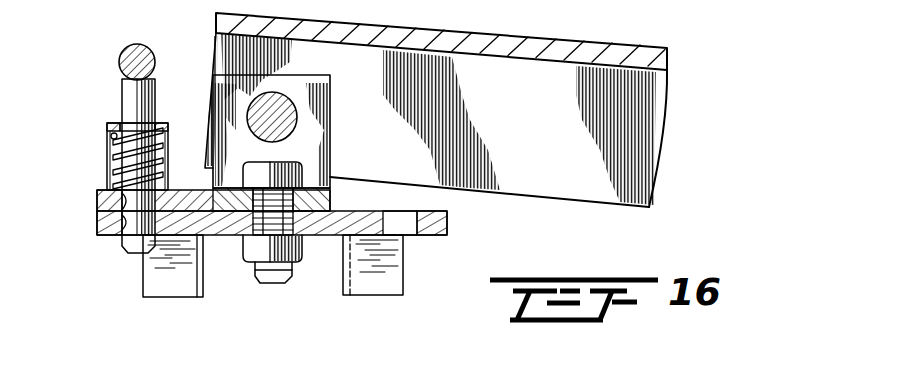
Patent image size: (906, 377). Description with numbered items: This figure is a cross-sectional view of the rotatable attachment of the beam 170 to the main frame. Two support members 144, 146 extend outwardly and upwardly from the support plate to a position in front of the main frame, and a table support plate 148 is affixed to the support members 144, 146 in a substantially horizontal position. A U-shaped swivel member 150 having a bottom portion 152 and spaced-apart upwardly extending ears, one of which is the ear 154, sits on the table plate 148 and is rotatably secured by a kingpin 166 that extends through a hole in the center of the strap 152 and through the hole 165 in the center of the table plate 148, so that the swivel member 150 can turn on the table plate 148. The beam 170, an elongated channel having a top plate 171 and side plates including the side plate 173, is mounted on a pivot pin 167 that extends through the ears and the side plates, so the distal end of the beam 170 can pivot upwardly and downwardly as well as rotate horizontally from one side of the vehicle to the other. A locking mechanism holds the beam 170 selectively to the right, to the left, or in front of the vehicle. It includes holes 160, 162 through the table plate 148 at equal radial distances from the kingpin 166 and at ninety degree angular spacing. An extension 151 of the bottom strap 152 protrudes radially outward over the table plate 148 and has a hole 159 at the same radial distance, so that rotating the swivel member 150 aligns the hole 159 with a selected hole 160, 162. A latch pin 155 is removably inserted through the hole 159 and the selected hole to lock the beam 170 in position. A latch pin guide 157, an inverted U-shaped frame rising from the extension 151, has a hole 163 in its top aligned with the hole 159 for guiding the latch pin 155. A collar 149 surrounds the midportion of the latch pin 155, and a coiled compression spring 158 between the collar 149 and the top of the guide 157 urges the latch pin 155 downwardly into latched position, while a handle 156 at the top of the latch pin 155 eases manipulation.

The support member 144 is at (143, 281).
The support member 146 is at (404, 288).
The table support plate 148 is at (346, 210).
The collar 149 is at (115, 188).
The swivel member 150 is at (338, 162).
The extension 151 is at (100, 189).
The bottom portion 152 is at (310, 186).
The ear 154 is at (212, 92).
The latch pin 155 is at (122, 82).
The handle 156 is at (125, 47).
The latch pin guide 157 is at (110, 135).
The coiled compression spring 158 is at (116, 154).
The hole 159 is at (125, 217).
The hole 160 is at (128, 242).
The hole 162 is at (412, 230).
The hole 163 is at (126, 128).
The hole 165 is at (255, 237).
The kingpin 166 is at (287, 283).
The pivot pin 167 is at (296, 107).
The beam 170 is at (678, 97).
The top plate 171 is at (523, 33).
The side plate 173 is at (537, 198).